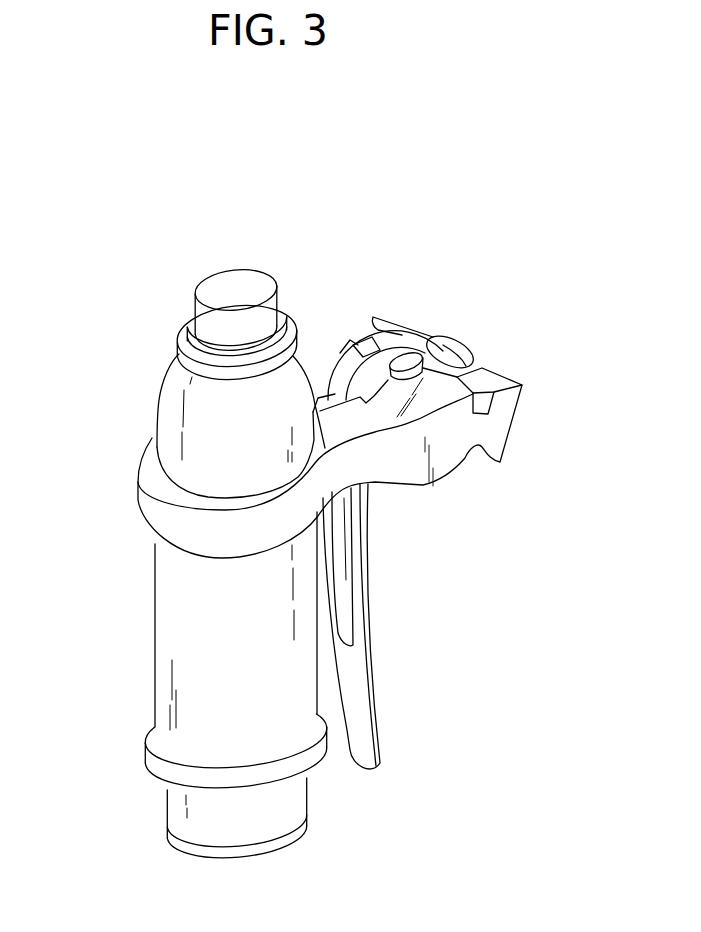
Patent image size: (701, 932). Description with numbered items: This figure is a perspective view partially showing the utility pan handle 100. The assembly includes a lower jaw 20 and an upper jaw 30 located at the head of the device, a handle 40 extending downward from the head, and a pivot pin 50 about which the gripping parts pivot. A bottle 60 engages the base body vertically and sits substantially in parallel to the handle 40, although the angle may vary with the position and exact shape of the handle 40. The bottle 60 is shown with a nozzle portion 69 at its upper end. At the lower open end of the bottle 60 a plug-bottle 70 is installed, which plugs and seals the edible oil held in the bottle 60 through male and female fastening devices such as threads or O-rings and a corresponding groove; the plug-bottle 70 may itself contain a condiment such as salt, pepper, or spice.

The utility pan handle 100 is at (137, 340).
The lower jaw 20 is at (488, 423).
The upper jaw 30 is at (443, 348).
The handle 40 is at (358, 712).
The pivot pin 50 is at (397, 450).
The bottle 60 is at (168, 640).
The nozzle portion 69 is at (235, 286).
The plug-bottle 70 is at (175, 803).